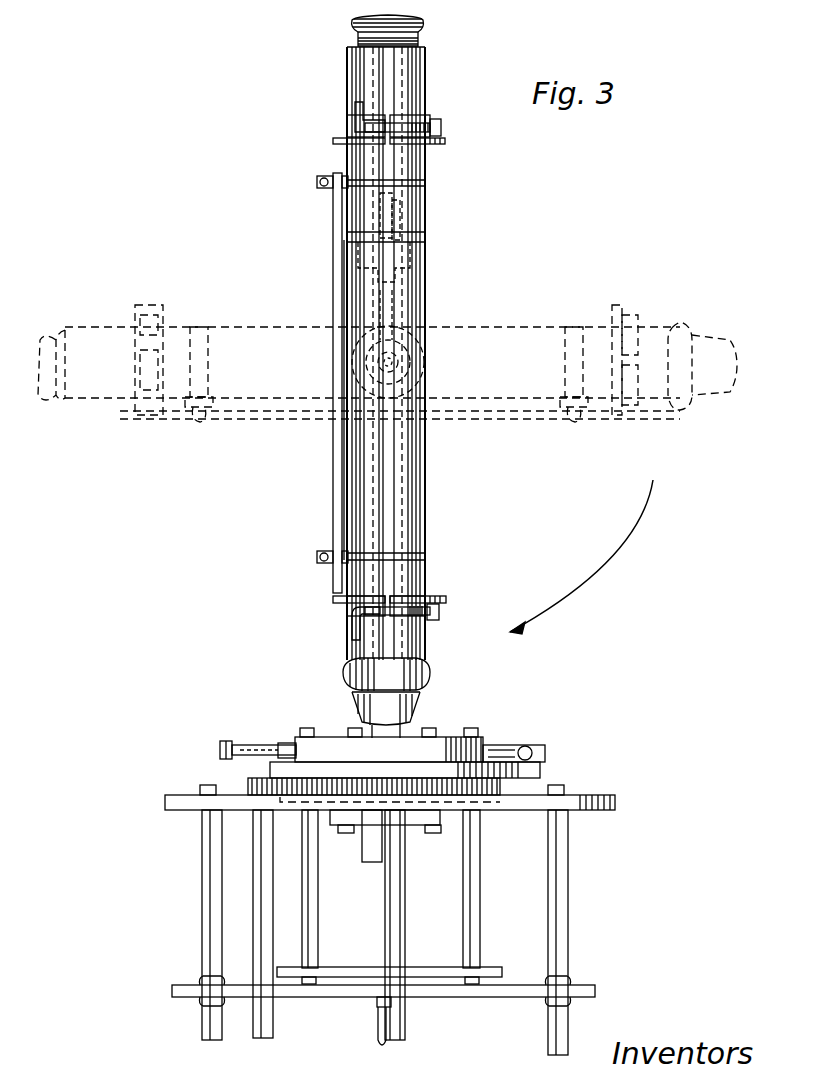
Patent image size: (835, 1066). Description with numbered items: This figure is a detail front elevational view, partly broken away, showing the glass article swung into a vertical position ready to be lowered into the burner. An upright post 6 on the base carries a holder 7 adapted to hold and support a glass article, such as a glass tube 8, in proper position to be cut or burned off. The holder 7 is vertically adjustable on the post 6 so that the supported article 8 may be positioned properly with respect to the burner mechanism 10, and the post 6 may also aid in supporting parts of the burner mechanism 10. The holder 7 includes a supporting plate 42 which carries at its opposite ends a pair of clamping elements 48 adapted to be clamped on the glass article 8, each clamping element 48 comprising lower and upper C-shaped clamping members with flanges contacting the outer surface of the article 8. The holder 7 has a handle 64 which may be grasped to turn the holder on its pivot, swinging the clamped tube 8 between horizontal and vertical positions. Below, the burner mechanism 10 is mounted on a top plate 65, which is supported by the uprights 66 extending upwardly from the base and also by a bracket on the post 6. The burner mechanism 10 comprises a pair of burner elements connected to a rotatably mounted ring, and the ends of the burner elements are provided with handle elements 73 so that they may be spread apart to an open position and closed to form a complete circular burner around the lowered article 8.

The post 6 is at (405, 896).
The holder 7 is at (425, 355).
The glass tube 8 is at (426, 505).
The burner mechanism 10 is at (485, 738).
The supporting plate 42 is at (345, 480).
The clamping elements 48 is at (432, 126).
The handle 64 is at (333, 217).
The top plate 65 is at (605, 795).
The uprights 66 is at (202, 906).
The handle elements 73 is at (262, 745).